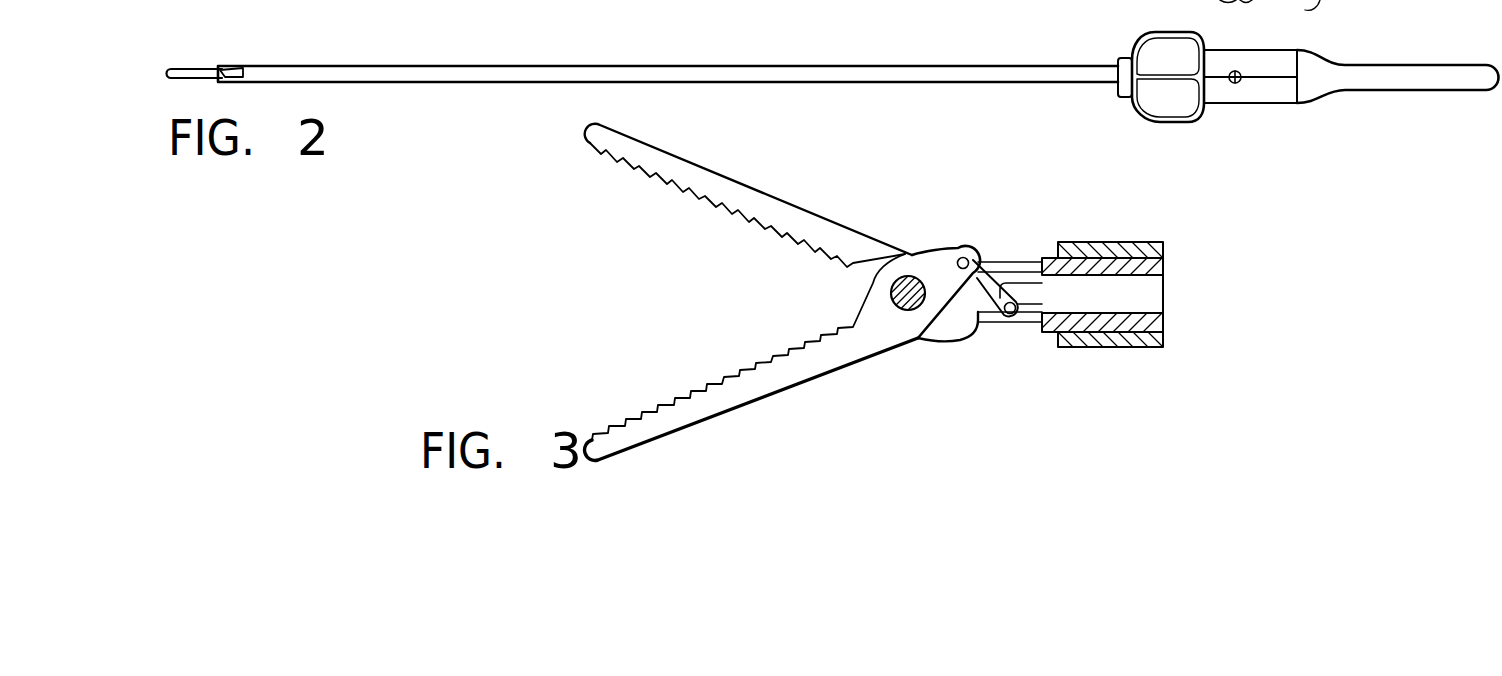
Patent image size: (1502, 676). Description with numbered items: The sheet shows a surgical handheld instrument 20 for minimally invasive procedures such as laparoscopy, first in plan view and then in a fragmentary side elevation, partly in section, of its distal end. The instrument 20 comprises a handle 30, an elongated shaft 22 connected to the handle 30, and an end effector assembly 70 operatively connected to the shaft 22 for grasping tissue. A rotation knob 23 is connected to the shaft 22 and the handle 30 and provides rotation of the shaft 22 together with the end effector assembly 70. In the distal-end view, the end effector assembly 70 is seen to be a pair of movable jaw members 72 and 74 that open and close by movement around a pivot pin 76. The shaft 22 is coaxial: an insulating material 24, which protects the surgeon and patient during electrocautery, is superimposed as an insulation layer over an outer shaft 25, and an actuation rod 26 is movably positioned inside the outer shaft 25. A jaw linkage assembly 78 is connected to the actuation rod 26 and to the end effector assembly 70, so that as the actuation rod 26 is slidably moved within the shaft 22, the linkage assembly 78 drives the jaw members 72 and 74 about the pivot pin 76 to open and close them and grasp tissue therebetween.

In FIG. 2, the surgical handheld instrument 20 is at (524, 104).
In FIG. 2, the elongated shaft 22 is at (1015, 72).
In FIG. 3, the elongated shaft 22 is at (1163, 229).
In FIG. 2, the rotation knob 23 is at (1153, 48).
In FIG. 3, the insulating material 24 is at (1088, 250).
In FIG. 3, the outer shaft 25 is at (1048, 252).
In FIG. 3, the actuation rod 26 is at (1034, 297).
In FIG. 2, the handle 30 is at (1411, 80).
In FIG. 2, the end effector assembly 70 is at (189, 58).
In FIG. 3, the end effector assembly 70 is at (742, 170).
In FIG. 3, the jaw member 72 is at (731, 198).
In FIG. 3, the jaw member 74 is at (730, 393).
In FIG. 3, the pivot pin 76 is at (903, 305).
In FIG. 3, the jaw linkage assembly 78 is at (983, 277).